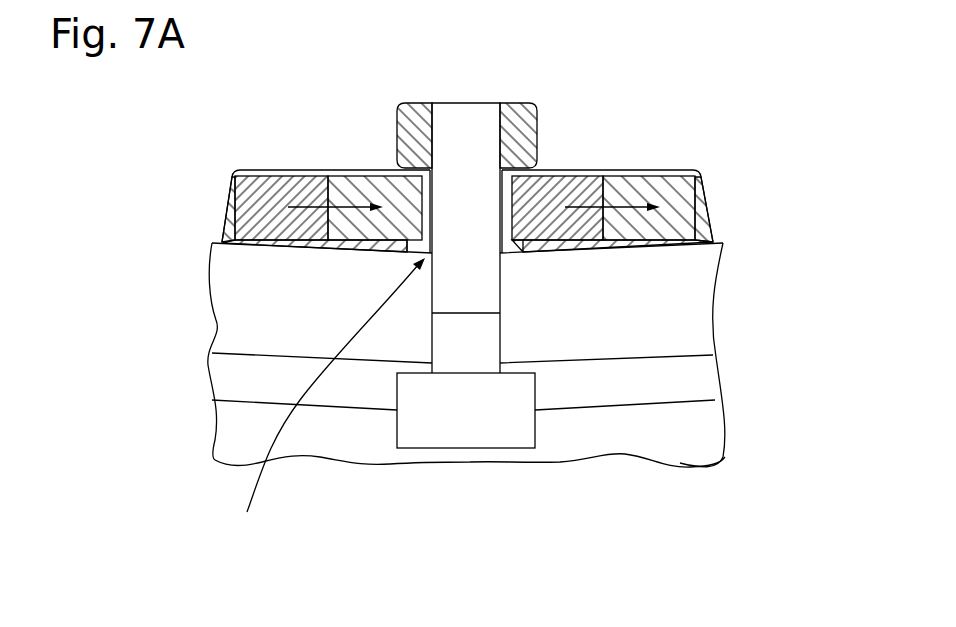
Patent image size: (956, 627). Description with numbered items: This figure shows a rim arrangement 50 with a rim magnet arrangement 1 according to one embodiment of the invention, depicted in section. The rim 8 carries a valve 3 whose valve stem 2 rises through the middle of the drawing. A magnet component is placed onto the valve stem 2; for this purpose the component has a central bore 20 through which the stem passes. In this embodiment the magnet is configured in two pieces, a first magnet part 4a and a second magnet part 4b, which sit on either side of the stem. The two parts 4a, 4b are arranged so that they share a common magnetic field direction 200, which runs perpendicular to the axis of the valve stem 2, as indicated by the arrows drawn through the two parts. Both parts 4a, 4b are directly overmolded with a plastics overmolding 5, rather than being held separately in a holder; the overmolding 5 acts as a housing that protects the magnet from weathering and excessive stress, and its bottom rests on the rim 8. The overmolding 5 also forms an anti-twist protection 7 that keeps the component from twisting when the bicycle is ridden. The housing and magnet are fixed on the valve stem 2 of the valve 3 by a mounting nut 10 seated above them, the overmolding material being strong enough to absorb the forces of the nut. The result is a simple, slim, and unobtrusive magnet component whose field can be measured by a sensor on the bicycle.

The rim arrangement 50 is at (775, 56).
The valve stem 2 is at (467, 112).
The mounting nut 10 is at (521, 113).
The magnetic field direction 200 is at (306, 207).
The first magnet part 4a is at (354, 190).
The second magnet part 4b is at (669, 187).
The anti-twist protection 7 is at (740, 184).
The overmolding 5 is at (703, 232).
The valve 3 is at (548, 317).
The rim magnet arrangement 1 is at (765, 374).
The rim 8 is at (693, 437).
The central bore 20 is at (326, 402).